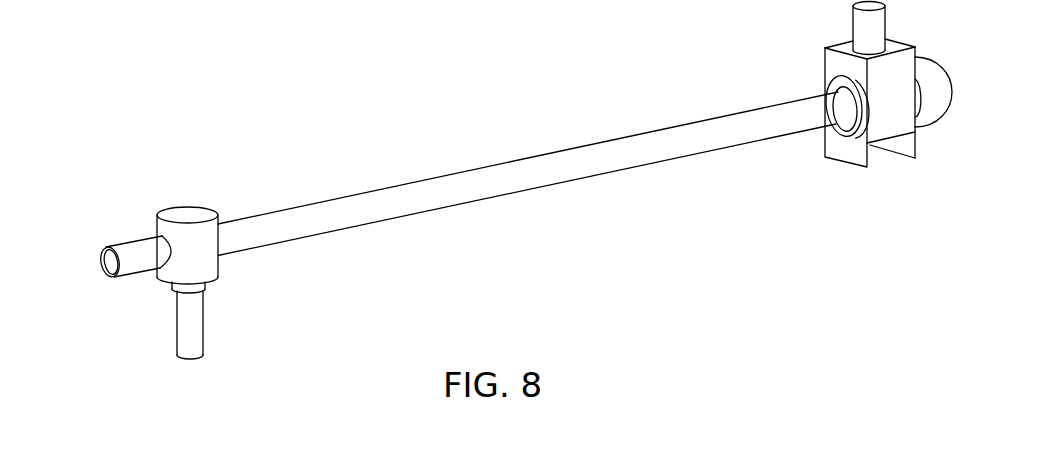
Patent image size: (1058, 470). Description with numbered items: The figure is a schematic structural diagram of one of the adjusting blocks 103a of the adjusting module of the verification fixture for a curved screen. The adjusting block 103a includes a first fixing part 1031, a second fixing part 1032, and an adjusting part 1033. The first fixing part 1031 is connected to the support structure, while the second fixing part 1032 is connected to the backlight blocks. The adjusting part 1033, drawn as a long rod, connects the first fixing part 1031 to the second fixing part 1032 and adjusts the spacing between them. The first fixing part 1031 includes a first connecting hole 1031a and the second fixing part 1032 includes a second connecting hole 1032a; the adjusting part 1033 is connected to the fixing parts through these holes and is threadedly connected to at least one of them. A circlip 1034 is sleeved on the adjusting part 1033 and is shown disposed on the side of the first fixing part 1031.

The adjusting block 103a is at (147, 99).
The first fixing part 1031 is at (838, 60).
The first connecting hole 1031a is at (841, 127).
The second fixing part 1032 is at (157, 216).
The second connecting hole 1032a is at (172, 263).
The adjusting part 1033 is at (343, 203).
The circlip 1034 is at (828, 88).